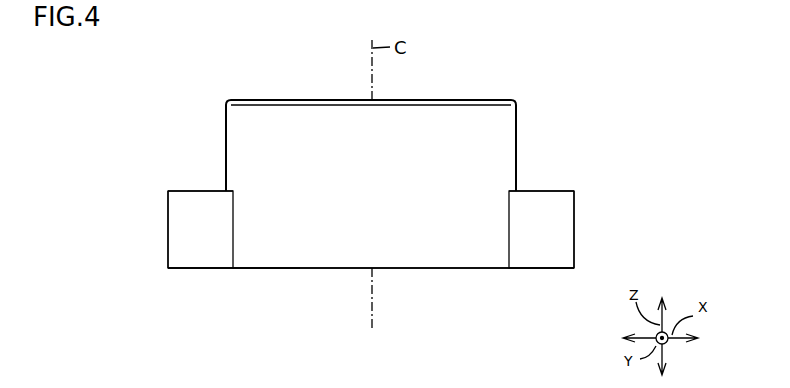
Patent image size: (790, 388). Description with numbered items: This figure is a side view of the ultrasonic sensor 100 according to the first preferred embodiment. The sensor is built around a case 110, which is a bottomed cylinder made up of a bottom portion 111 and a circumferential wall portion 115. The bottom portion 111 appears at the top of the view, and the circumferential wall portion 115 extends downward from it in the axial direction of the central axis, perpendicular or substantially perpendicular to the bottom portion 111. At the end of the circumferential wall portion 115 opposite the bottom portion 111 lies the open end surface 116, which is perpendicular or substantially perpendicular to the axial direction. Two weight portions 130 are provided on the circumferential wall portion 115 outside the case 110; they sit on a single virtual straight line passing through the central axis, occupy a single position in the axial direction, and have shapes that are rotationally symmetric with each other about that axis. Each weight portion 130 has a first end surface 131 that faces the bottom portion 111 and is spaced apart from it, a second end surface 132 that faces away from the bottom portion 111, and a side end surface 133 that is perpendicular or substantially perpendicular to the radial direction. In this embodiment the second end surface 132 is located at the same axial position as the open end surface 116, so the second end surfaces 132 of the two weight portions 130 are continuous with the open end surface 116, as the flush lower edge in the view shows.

The ultrasonic sensor 100 is at (604, 112).
The case 110 is at (445, 258).
The bottom portion 111 is at (430, 99).
The circumferential wall portion 115 is at (333, 220).
The open end surface 116 is at (275, 269).
The weight portions 130 is at (177, 248).
The first end surface 131 is at (193, 190).
The second end surface 132 is at (182, 269).
The side end surface 133 is at (168, 214).